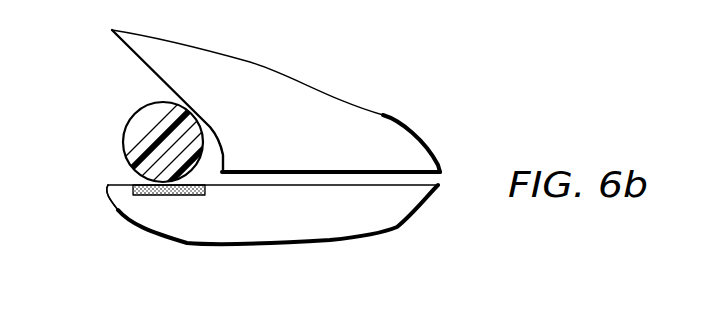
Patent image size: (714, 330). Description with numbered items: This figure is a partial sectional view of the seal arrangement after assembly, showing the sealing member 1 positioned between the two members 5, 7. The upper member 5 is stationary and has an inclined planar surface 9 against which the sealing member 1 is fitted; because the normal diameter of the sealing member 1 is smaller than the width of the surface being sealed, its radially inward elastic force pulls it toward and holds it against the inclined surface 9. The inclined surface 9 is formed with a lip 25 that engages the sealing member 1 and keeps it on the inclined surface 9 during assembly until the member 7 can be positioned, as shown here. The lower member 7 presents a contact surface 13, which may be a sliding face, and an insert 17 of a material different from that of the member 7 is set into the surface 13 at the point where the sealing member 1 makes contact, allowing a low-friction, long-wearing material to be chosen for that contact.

The sealing member 1 is at (128, 123).
The member 5 is at (384, 114).
The member 7 is at (397, 228).
The inclined planar surface 9 is at (137, 55).
The surface 13 is at (115, 190).
The insert 17 is at (156, 196).
The lip 25 is at (226, 170).